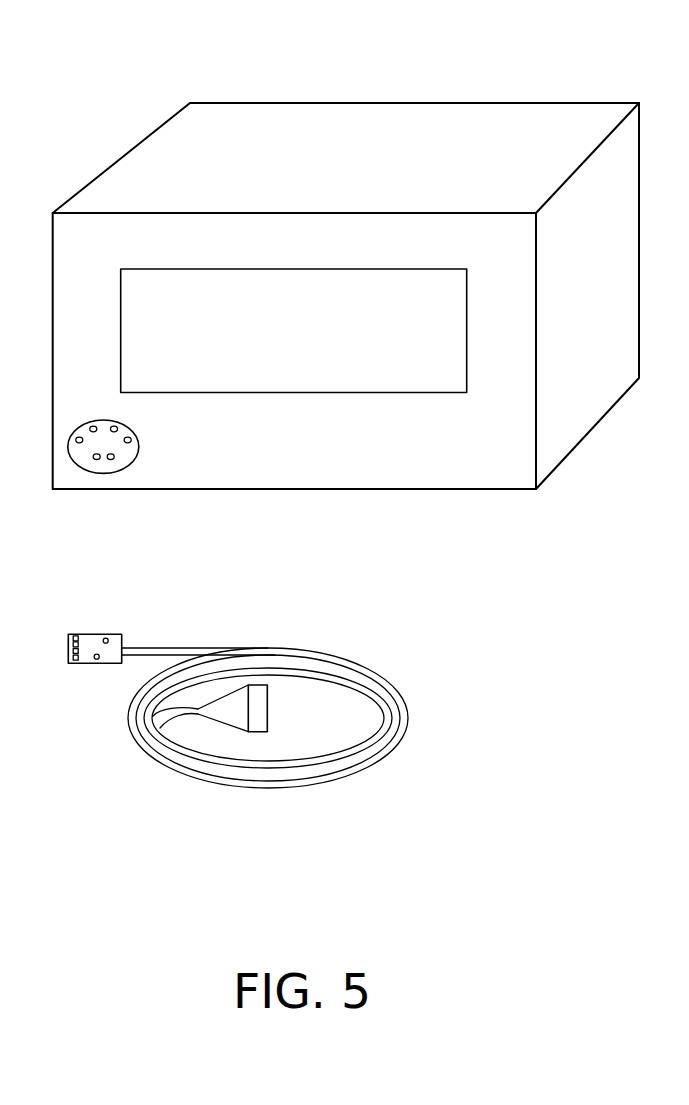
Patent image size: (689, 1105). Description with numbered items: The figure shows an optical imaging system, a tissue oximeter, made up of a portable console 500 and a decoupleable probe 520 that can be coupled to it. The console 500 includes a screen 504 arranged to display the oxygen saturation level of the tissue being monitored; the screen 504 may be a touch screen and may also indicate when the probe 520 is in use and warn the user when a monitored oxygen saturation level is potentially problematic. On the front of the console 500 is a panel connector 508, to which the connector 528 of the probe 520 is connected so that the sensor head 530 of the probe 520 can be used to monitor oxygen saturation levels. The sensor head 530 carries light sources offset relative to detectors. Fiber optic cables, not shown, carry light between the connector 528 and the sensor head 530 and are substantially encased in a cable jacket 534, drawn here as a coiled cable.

The console 500 is at (492, 40).
The screen 504 is at (422, 393).
The panel connector 508 is at (108, 475).
The probe 520 is at (446, 645).
The connector 528 is at (267, 699).
The sensor head 530 is at (110, 634).
The cable jacket 534 is at (305, 786).